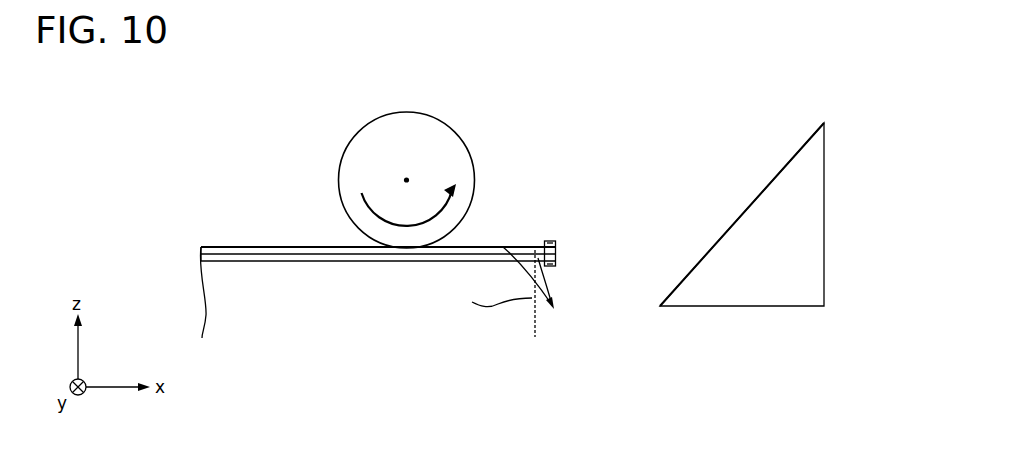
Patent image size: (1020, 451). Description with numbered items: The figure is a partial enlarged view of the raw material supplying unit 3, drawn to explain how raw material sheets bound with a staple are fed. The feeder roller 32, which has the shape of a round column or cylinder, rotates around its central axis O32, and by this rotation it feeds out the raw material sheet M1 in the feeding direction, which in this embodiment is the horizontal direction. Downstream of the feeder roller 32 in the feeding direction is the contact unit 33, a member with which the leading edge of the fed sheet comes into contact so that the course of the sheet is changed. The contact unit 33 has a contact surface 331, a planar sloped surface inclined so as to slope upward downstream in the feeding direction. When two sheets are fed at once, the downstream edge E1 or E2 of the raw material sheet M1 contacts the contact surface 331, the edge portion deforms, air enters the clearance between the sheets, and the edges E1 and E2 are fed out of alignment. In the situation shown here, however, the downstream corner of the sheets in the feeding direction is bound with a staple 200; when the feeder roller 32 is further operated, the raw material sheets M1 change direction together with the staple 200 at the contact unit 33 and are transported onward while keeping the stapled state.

The raw material supplying unit 3 is at (637, 100).
The feeder roller 32 is at (398, 112).
The central axis O32 is at (406, 177).
The staple 200 is at (546, 241).
The leading edge E1 is at (556, 248).
The edge E2 is at (556, 259).
The raw material sheet M1 is at (527, 292).
The contact unit 33 is at (824, 195).
The contact surface 331 is at (678, 285).